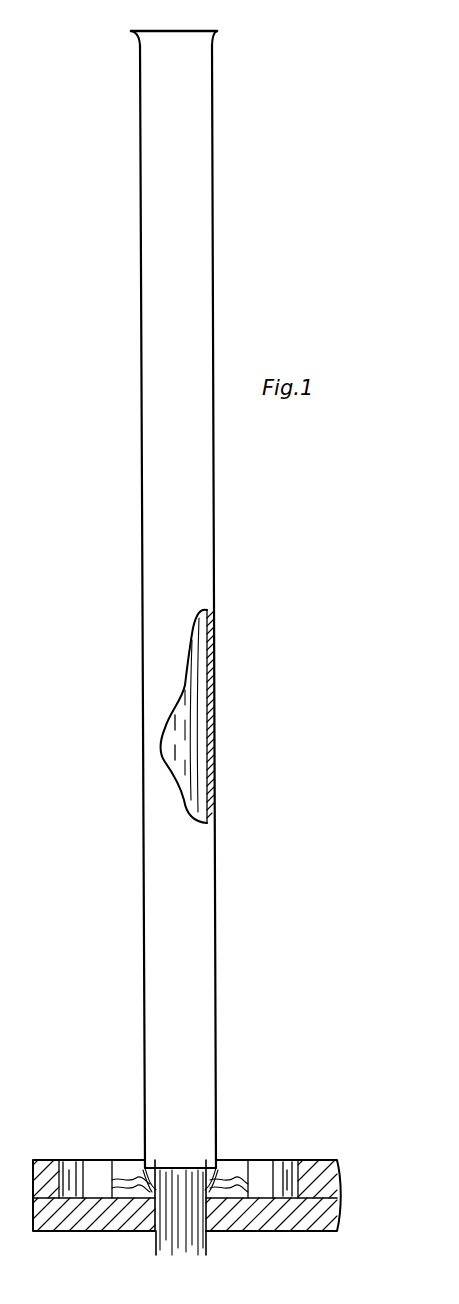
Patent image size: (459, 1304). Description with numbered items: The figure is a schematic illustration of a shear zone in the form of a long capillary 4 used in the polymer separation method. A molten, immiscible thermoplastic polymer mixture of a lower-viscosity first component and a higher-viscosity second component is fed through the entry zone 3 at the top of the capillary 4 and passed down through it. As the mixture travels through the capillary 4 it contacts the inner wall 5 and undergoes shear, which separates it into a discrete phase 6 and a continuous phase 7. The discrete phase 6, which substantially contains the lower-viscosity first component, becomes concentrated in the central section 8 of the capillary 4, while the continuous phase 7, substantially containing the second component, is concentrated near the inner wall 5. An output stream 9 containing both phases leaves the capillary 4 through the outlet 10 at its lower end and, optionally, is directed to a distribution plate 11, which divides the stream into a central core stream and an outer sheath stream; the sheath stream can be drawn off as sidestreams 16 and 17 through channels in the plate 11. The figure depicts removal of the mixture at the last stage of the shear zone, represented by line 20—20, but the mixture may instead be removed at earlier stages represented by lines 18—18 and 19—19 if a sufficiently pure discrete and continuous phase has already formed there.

The entry zone 3 is at (162, 29).
The capillary 4 is at (232, 70).
The inner wall 5 is at (215, 718).
The discrete phase 6 is at (197, 657).
The continuous phase 7 is at (200, 763).
The central section 8 is at (170, 745).
The output stream 9 is at (192, 1178).
The outlet 10 is at (168, 1170).
The distribution plate 11 is at (338, 1165).
The sidestream 16 is at (121, 1190).
The sidestream 17 is at (243, 1195).
The line 18— 18 is at (138, 168).
The line 19— 19 is at (140, 553).
The line 20— 20 is at (142, 1066).